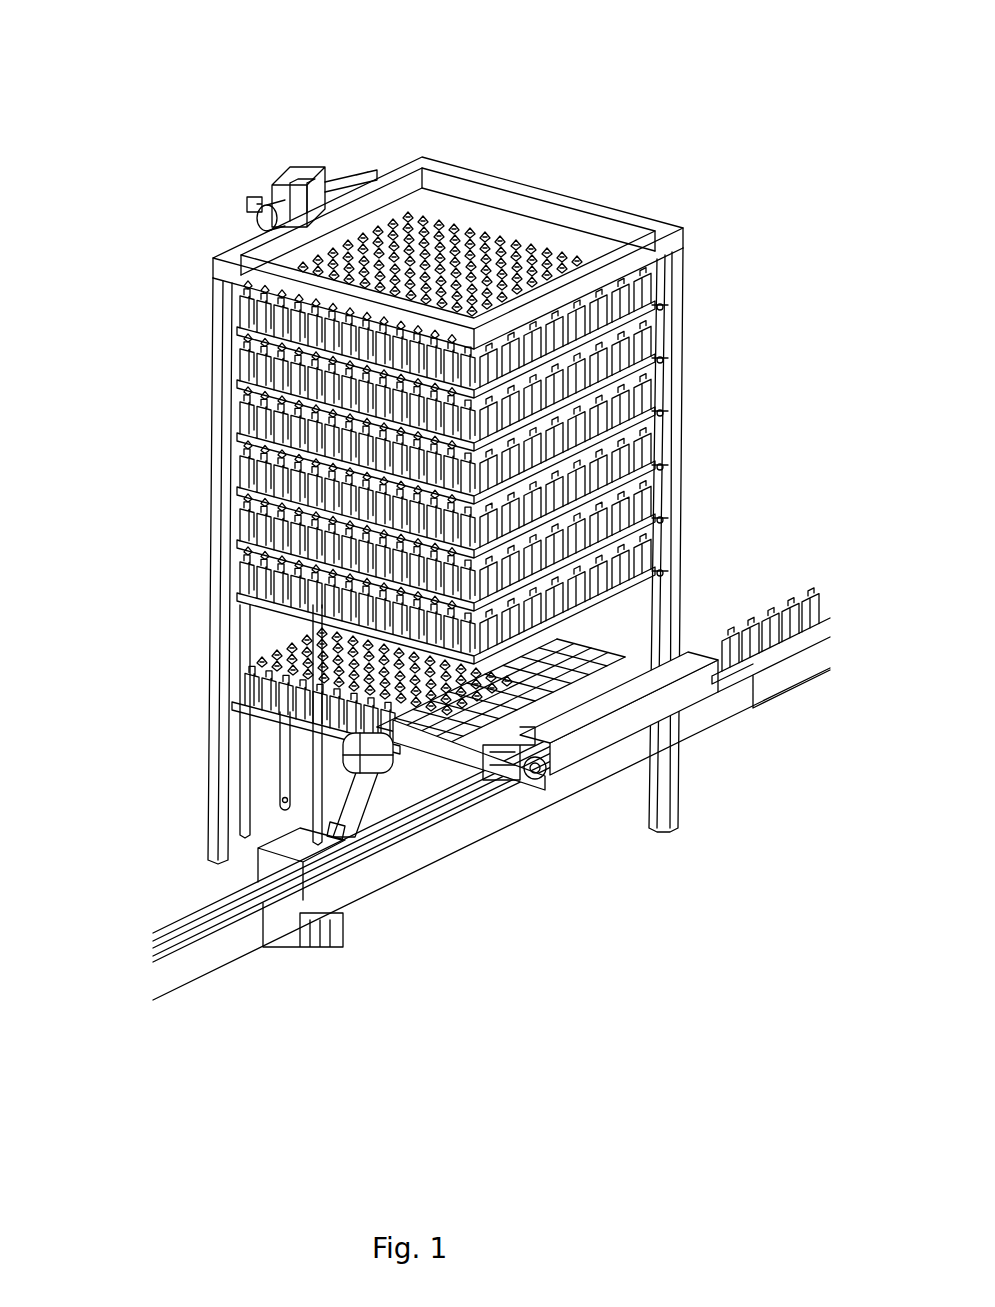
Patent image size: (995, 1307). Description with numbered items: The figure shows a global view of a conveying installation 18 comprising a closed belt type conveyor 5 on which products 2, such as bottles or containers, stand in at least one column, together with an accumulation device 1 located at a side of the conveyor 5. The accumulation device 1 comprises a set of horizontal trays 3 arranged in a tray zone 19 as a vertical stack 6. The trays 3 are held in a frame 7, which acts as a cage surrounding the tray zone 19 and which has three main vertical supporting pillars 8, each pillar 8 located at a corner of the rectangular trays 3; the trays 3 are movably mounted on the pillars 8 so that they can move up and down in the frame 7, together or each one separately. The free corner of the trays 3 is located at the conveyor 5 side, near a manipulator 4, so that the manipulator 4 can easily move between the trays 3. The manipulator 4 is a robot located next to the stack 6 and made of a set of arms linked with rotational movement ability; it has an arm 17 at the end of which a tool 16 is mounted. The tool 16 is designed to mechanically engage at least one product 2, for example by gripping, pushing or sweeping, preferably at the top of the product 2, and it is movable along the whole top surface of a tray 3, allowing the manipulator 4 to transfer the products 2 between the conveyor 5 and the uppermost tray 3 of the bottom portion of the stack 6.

The accumulation device 1 is at (150, 325).
The products 2 is at (270, 660).
The horizontal trays 3 is at (655, 307).
The manipulator 4 is at (330, 806).
The conveyor 5 is at (267, 843).
The vertical stack 6 is at (757, 472).
The frame 7 is at (702, 203).
The vertical supporting pillars 8 is at (220, 482).
The tool 16 is at (672, 698).
The arm 17 is at (447, 748).
The conveying installation 18 is at (585, 1012).
The tray zone 19 is at (421, 135).